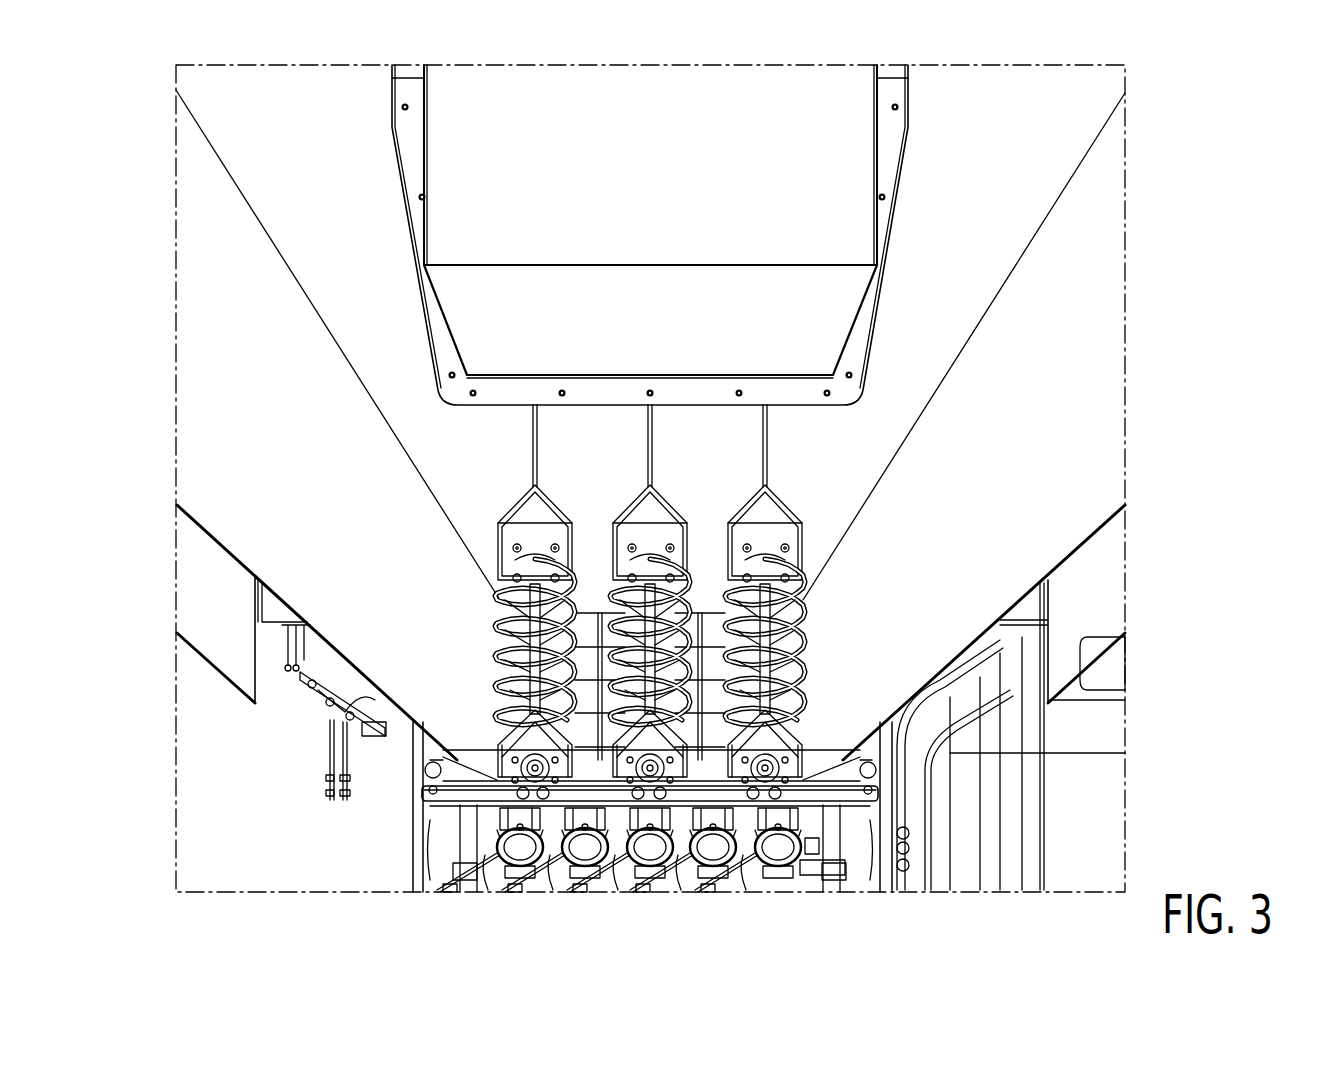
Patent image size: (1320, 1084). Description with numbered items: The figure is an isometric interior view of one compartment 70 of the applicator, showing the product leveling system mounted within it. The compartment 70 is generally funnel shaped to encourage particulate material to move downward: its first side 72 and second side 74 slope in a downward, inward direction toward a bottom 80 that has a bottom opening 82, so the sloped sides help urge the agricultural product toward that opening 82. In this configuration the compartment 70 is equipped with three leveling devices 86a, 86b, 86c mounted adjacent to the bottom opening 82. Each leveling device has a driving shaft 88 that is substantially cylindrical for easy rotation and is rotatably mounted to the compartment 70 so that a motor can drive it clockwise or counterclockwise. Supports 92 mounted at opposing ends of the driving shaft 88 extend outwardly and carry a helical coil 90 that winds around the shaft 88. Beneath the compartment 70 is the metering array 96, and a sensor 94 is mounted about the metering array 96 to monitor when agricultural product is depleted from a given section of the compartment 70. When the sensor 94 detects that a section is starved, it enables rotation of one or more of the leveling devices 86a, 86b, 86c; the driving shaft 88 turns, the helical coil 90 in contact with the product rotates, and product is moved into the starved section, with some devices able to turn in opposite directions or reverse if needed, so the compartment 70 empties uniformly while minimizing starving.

The compartment 70 is at (400, 383).
The first side 72 is at (1063, 538).
The second side 74 is at (230, 528).
The bottom 80 is at (717, 750).
The bottom opening 82 is at (583, 745).
The leveling device 86a is at (487, 594).
The leveling device 86b is at (785, 603).
The leveling device 86c is at (667, 603).
The driving shaft 88 is at (515, 612).
The helical coil 90 is at (535, 603).
The supports 92 is at (523, 567).
The sensor 94 is at (812, 850).
The metering array 96 is at (572, 853).